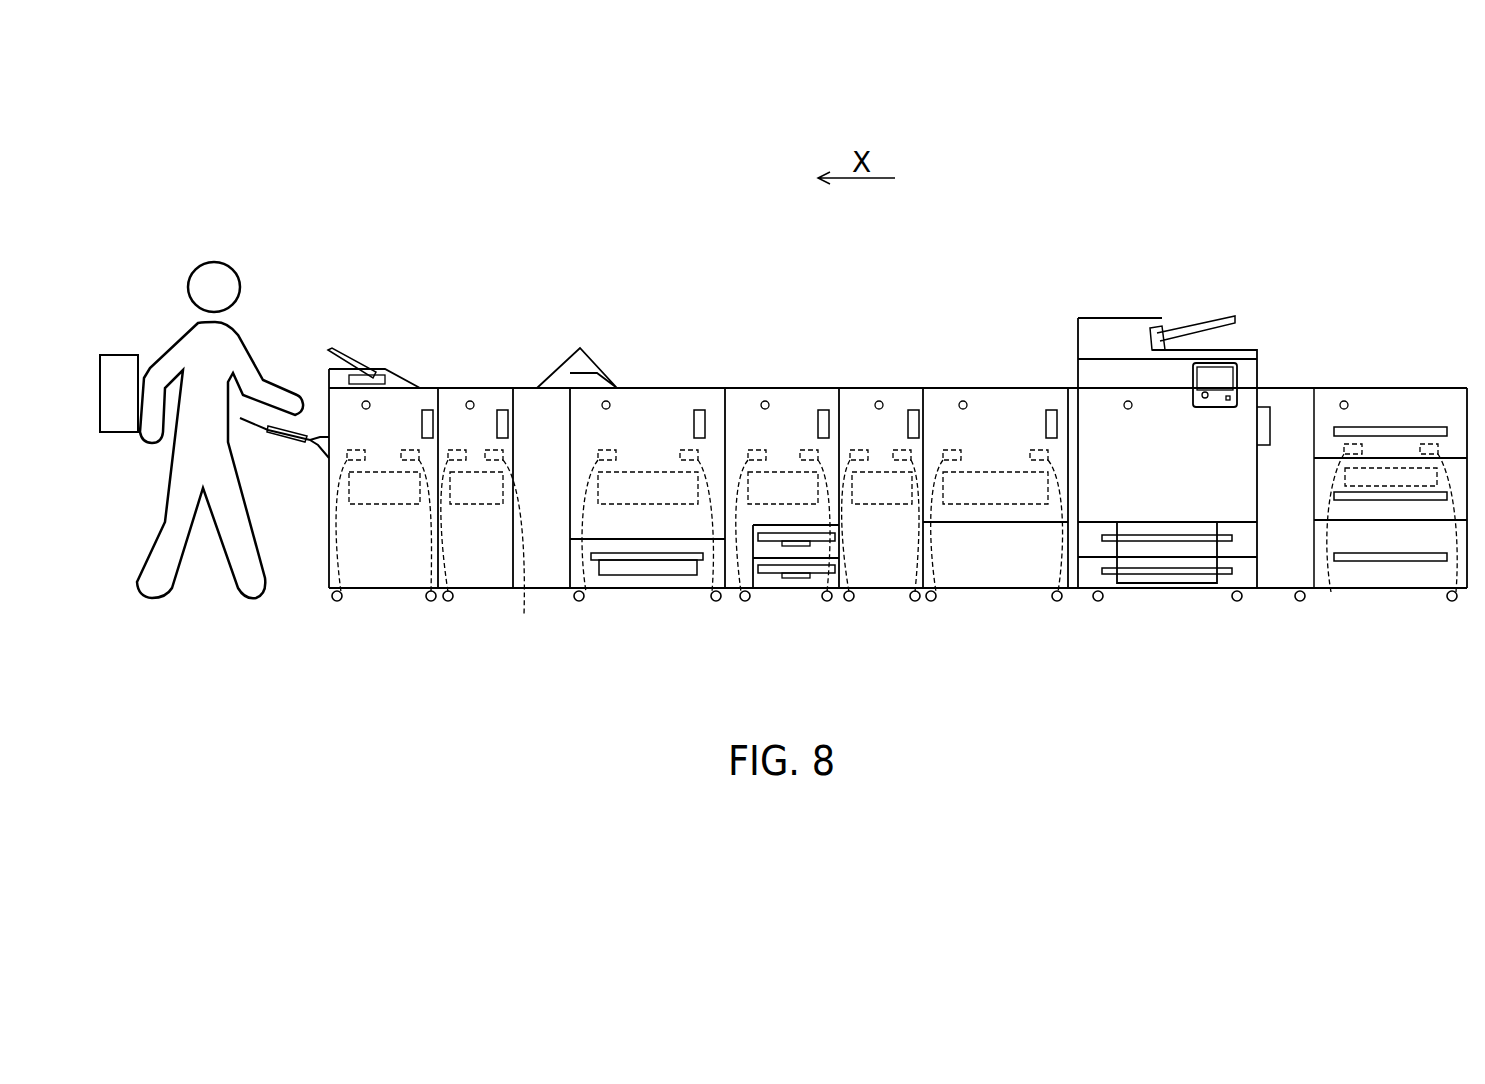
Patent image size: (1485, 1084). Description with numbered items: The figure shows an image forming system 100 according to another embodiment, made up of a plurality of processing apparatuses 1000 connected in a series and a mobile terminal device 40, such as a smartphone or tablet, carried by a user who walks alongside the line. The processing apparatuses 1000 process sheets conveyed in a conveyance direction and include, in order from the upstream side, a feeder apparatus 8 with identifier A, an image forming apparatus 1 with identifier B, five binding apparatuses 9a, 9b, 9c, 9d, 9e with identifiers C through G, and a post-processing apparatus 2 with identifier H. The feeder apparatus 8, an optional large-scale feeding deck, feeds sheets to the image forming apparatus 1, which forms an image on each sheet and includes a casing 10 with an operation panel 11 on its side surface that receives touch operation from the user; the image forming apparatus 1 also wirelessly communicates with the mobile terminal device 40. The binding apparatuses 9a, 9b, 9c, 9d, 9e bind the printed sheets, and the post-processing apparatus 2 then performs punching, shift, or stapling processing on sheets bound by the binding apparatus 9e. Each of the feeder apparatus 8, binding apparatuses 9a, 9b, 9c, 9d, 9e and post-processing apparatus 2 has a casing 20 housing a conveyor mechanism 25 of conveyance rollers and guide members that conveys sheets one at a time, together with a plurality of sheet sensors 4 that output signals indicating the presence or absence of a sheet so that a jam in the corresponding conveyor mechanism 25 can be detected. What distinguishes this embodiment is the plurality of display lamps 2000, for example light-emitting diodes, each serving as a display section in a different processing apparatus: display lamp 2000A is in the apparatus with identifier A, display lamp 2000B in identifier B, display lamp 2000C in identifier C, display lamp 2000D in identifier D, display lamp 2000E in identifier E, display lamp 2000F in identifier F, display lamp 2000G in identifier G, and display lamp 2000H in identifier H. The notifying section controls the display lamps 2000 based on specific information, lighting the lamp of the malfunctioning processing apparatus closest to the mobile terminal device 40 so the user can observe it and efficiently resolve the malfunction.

The image forming system 100 is at (1306, 167).
The processing apparatuses 1000 is at (897, 412).
The image forming apparatus 1 is at (1177, 399).
The post-processing apparatus 2 is at (382, 281).
The feeder apparatus 8 is at (1409, 298).
The binding apparatus 9a is at (489, 280).
The binding apparatus 9b is at (641, 280).
The binding apparatus 9c is at (774, 280).
The binding apparatus 9d is at (895, 280).
The binding apparatus 9e is at (1015, 280).
The casing 10 is at (1090, 398).
The operation panel 11 is at (1251, 369).
The casing 20 is at (430, 388).
The conveyor mechanism 25 is at (1368, 603).
The sheet sensors 4 is at (1458, 618).
The mobile terminal device 40 is at (127, 355).
The display lamps 2000 is at (837, 352).
The display lamp 2000A is at (1345, 401).
The display lamp 2000B is at (1130, 401).
The display lamp 2000C is at (963, 401).
The display lamp 2000D is at (879, 401).
The display lamp 2000E is at (765, 401).
The display lamp 2000F is at (608, 401).
The display lamp 2000G is at (471, 401).
The display lamp 2000H is at (368, 402).